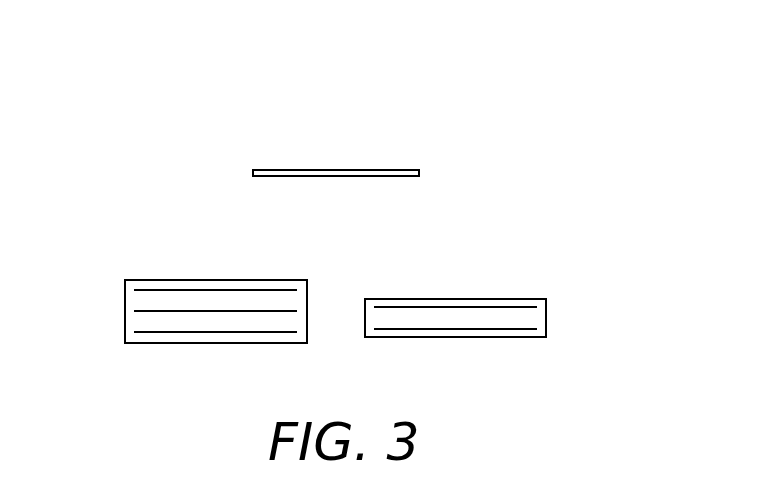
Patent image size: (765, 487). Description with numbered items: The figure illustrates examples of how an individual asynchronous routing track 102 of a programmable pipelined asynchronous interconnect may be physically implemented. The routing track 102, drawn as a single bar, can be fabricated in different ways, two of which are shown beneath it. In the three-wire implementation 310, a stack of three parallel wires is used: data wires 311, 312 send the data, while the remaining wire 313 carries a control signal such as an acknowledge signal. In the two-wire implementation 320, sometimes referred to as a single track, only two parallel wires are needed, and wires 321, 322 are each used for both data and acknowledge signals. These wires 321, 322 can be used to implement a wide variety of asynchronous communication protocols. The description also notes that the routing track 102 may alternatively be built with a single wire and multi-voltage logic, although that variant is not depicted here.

The routing track 102 is at (394, 168).
The three-wire implementation 310 is at (283, 279).
The data wire 311 is at (215, 290).
The data wire 312 is at (138, 311).
The wire 313 is at (215, 332).
The two-wire implementation 320 is at (522, 298).
The wire 321 is at (455, 307).
The wire 322 is at (455, 329).